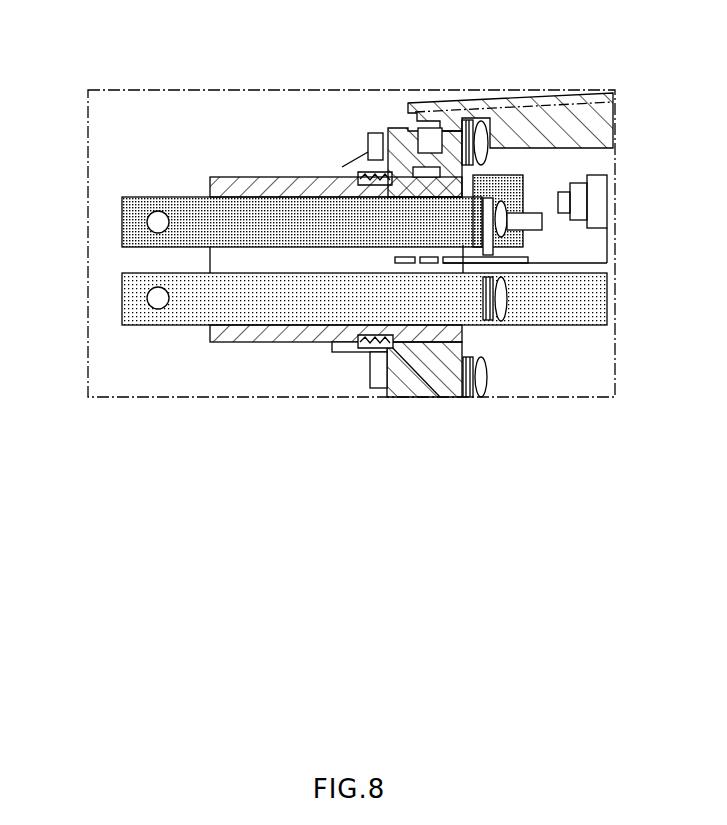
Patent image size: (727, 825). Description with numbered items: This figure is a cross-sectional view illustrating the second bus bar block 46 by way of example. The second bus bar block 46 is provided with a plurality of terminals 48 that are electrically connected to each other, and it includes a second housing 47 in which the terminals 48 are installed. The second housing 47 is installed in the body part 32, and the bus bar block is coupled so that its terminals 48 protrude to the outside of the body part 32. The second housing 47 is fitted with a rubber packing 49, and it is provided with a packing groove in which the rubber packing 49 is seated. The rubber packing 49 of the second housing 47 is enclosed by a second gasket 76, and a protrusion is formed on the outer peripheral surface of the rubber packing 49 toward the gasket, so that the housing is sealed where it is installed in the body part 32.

The body part 32 is at (533, 103).
The second bus bar block 46 is at (213, 163).
The second housing 47 is at (267, 330).
The terminals 48 is at (120, 222).
The rubber packing 49 is at (372, 350).
The second gasket 76 is at (378, 137).